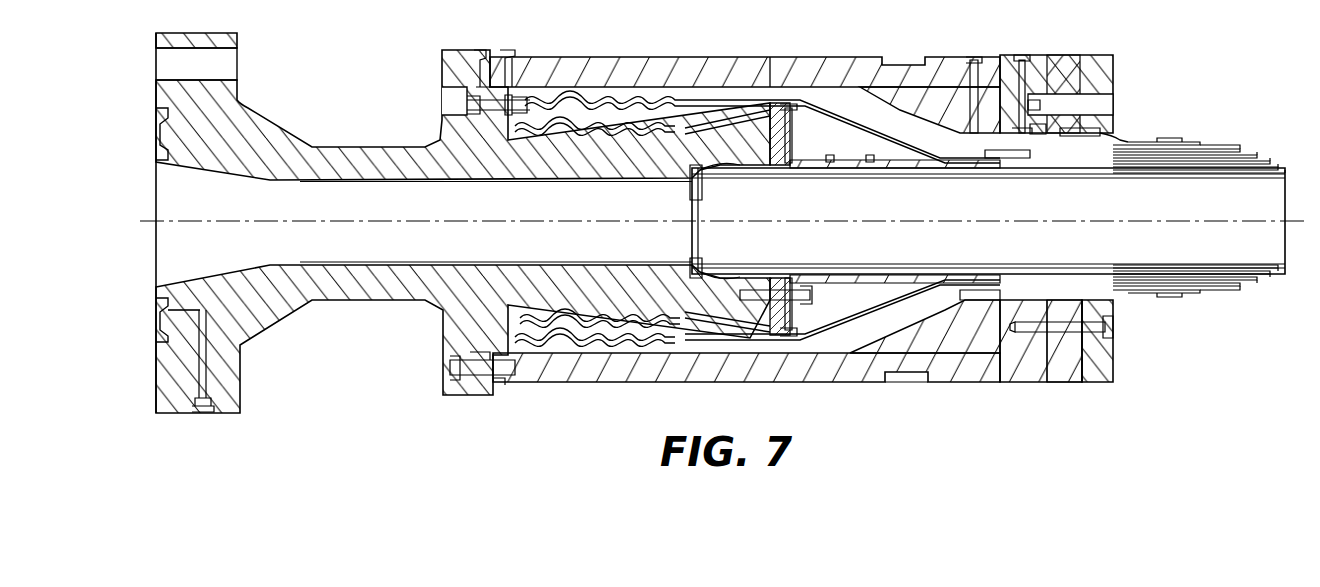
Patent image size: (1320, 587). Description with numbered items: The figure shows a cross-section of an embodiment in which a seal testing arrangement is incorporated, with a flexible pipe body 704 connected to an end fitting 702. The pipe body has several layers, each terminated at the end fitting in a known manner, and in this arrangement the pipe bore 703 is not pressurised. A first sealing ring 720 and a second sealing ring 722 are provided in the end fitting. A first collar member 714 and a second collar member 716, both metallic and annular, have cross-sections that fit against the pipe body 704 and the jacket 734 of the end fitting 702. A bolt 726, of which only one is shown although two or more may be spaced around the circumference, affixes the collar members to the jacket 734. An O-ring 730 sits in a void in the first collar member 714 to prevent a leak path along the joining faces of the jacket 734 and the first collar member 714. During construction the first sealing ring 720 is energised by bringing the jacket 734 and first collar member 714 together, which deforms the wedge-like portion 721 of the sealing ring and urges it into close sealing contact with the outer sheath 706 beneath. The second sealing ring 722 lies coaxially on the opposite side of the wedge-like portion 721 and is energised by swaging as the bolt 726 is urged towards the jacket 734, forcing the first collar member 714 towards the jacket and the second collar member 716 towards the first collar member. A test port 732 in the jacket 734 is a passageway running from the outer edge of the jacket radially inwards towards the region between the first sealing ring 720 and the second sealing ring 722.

The end fitting 702 is at (544, 405).
The pipe bore 703 is at (988, 221).
The flexible pipe body 704 is at (1254, 292).
The outer sheath 706 is at (1128, 136).
The first collar member 714 is at (1068, 375).
The second collar member 716 is at (1097, 363).
The first sealing ring 720 is at (1015, 148).
The wedge-like portion 721 is at (988, 300).
The second sealing ring 722 is at (1080, 138).
The bolt 726 is at (1115, 323).
The O-ring 730 is at (1036, 136).
The test port 732 is at (1021, 55).
The jacket 734 is at (876, 386).